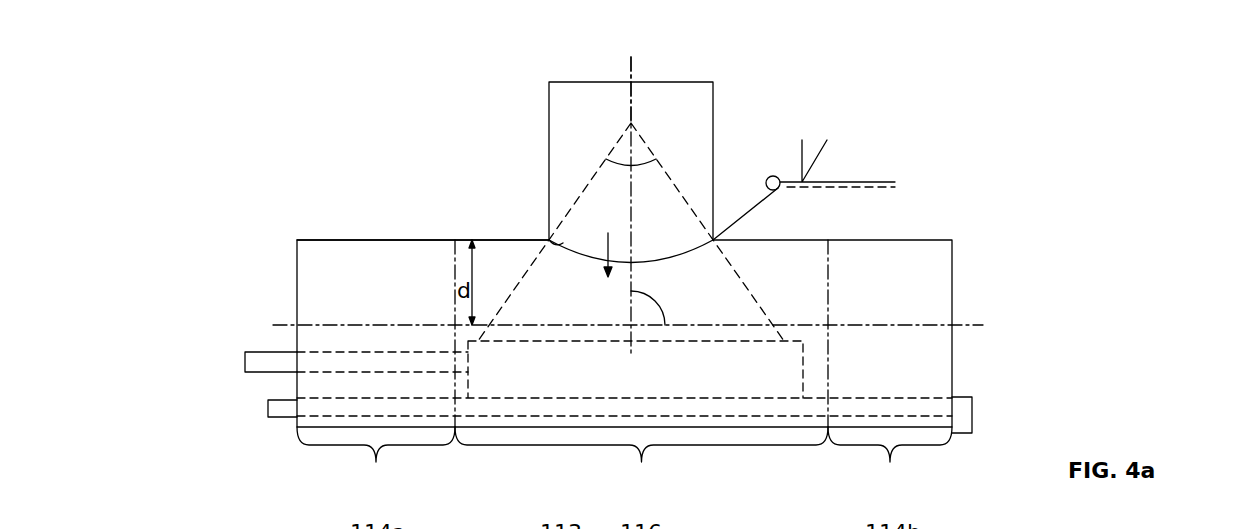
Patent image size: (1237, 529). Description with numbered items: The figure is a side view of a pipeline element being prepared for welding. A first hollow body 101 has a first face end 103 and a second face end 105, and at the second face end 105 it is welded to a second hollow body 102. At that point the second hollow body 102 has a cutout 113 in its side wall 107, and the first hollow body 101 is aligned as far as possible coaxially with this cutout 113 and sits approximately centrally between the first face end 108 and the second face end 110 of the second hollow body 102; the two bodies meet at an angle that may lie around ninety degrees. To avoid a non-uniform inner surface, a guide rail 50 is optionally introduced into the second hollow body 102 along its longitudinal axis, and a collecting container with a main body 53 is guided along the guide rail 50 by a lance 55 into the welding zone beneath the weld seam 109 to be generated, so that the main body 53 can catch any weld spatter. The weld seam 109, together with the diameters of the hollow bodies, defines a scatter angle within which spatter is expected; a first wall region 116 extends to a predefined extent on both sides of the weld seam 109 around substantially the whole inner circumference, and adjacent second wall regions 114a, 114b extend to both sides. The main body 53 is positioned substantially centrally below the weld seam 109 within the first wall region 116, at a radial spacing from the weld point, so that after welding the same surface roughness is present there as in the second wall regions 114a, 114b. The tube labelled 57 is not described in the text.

The guide rail 50 is at (283, 410).
The main body 53 is at (790, 382).
The lance 55 is at (255, 362).
The outlet tube 57 is at (967, 422).
The first hollow body 101 is at (549, 126).
The second hollow body 102 is at (297, 272).
The first face end 103 is at (605, 64).
The second face end 105 is at (652, 238).
The side wall 107 is at (360, 241).
The first face end 108 is at (222, 361).
The weld seam 109 is at (560, 242).
The second face end 110 is at (976, 367).
The cutout 113 is at (600, 248).
The second wall region 114a is at (376, 463).
The second wall region 114b is at (890, 463).
The first wall region 116 is at (641, 463).